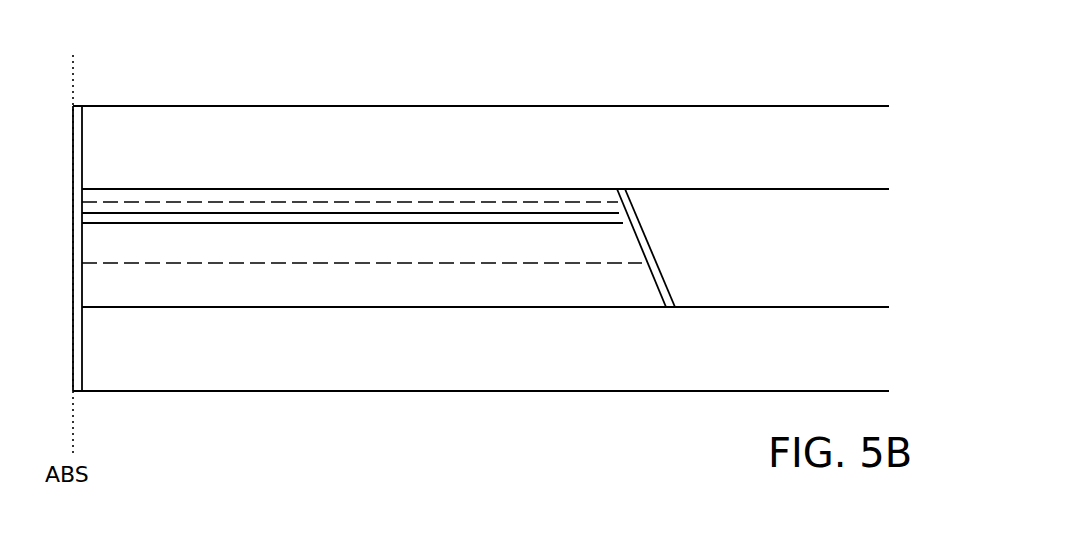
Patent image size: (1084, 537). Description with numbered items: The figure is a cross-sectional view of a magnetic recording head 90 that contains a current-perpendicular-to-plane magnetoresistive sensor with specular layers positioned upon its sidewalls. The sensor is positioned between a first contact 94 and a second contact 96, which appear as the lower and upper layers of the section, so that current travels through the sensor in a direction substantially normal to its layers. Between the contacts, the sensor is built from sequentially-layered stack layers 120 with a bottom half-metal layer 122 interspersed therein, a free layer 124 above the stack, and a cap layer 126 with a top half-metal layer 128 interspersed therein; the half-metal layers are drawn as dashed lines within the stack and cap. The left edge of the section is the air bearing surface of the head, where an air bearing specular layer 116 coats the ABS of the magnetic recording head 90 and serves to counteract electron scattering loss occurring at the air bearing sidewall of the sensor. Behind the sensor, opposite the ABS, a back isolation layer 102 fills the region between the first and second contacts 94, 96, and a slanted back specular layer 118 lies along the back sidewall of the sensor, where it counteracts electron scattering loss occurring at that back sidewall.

The magnetic recording head 90 is at (502, 202).
The first contact 94 is at (485, 337).
The second contact 96 is at (485, 161).
The back isolation layer 102 is at (782, 220).
The air bearing specular layer 116 is at (76, 126).
The back specular layer 118 is at (640, 227).
The stack layers 120 is at (305, 248).
The bottom half-metal layer 122 is at (357, 264).
The free layer 124 is at (297, 218).
The cap layer 126 is at (355, 207).
The top half-metal layer 128 is at (433, 202).